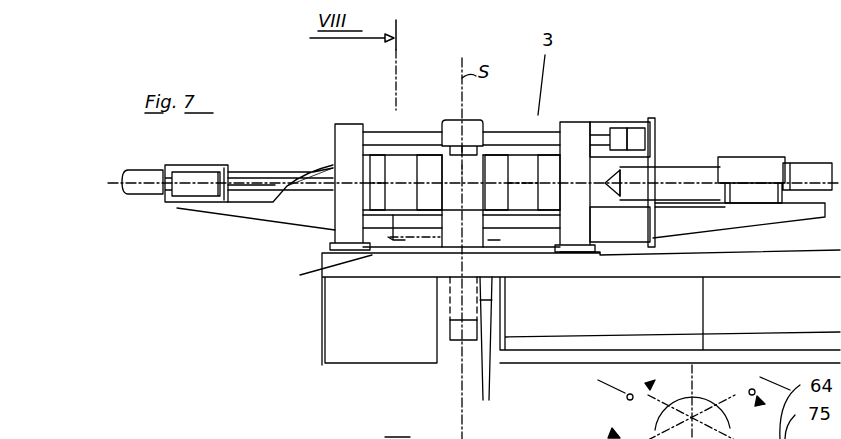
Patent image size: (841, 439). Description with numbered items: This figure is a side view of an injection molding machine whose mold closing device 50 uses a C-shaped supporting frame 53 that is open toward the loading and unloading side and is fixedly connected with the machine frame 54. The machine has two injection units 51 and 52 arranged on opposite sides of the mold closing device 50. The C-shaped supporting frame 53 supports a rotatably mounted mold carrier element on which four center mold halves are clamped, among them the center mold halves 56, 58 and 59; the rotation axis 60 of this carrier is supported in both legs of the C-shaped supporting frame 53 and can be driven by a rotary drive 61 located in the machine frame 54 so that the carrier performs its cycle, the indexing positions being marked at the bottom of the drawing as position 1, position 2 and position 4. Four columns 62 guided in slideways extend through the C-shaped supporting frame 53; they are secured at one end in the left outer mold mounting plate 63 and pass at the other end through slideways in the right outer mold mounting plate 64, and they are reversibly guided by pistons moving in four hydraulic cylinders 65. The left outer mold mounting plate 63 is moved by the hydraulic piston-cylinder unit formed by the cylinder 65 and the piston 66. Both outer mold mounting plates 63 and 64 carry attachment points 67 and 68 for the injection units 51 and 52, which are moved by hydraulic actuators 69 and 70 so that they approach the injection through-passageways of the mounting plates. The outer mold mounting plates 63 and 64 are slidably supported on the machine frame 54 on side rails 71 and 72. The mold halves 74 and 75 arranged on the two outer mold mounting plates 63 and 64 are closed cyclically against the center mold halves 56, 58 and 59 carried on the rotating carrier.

The position 1 is at (754, 371).
The position 2 is at (604, 398).
The position 4 is at (763, 427).
The mold closing device 50 is at (566, 104).
The injection unit 51 is at (735, 144).
The injection unit 52 is at (243, 147).
The C-shaped supporting frame 53 is at (500, 238).
The machine frame 54 is at (362, 352).
The center mold half 56 is at (507, 168).
The center mold half 58 is at (428, 168).
The center mold half 59 is at (472, 150).
The rotation axis 60 is at (460, 375).
The rotary drive 61 is at (482, 380).
The column 62 is at (405, 125).
The left outer mold mounting plate 63 is at (350, 128).
The right outer mold mounting plate 64 is at (582, 125).
The hydraulic cylinder 65 is at (630, 125).
The piston 66 is at (610, 215).
The attachment point 67 is at (285, 216).
The attachment point 68 is at (748, 218).
The hydraulic actuator 69 is at (195, 200).
The hydraulic actuator 70 is at (693, 192).
The side rail 71 is at (372, 255).
The side rail 72 is at (533, 253).
The mold half 74 is at (382, 200).
The mold half 75 is at (545, 192).